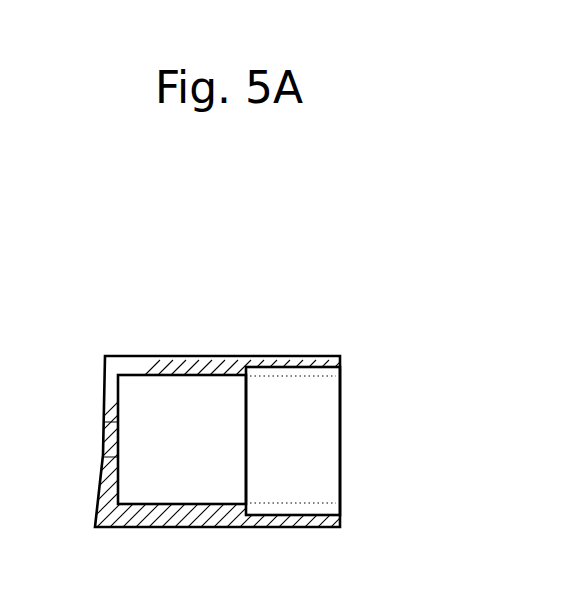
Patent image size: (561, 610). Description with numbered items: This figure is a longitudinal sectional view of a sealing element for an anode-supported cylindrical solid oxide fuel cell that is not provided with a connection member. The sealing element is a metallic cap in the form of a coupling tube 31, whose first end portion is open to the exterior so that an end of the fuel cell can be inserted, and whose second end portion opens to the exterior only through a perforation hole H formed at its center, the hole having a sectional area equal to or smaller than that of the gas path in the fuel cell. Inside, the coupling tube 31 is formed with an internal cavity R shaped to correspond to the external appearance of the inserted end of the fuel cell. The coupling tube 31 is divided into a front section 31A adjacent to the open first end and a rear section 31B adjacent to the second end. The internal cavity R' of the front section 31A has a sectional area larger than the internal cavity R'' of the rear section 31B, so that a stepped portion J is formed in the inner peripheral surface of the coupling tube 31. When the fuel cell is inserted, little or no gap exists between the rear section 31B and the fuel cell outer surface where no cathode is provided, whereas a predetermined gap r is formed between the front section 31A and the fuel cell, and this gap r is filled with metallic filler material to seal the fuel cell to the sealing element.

The coupling tube 31 is at (140, 356).
The front section 31A is at (339, 527).
The rear section 31B is at (241, 527).
The perforation hole H is at (104, 440).
The internal cavity R is at (214, 237).
The internal cavity of the front section R' is at (261, 346).
The internal cavity of the rear section R'' is at (177, 351).
The gap r is at (342, 367).
The stepped portion J is at (246, 504).